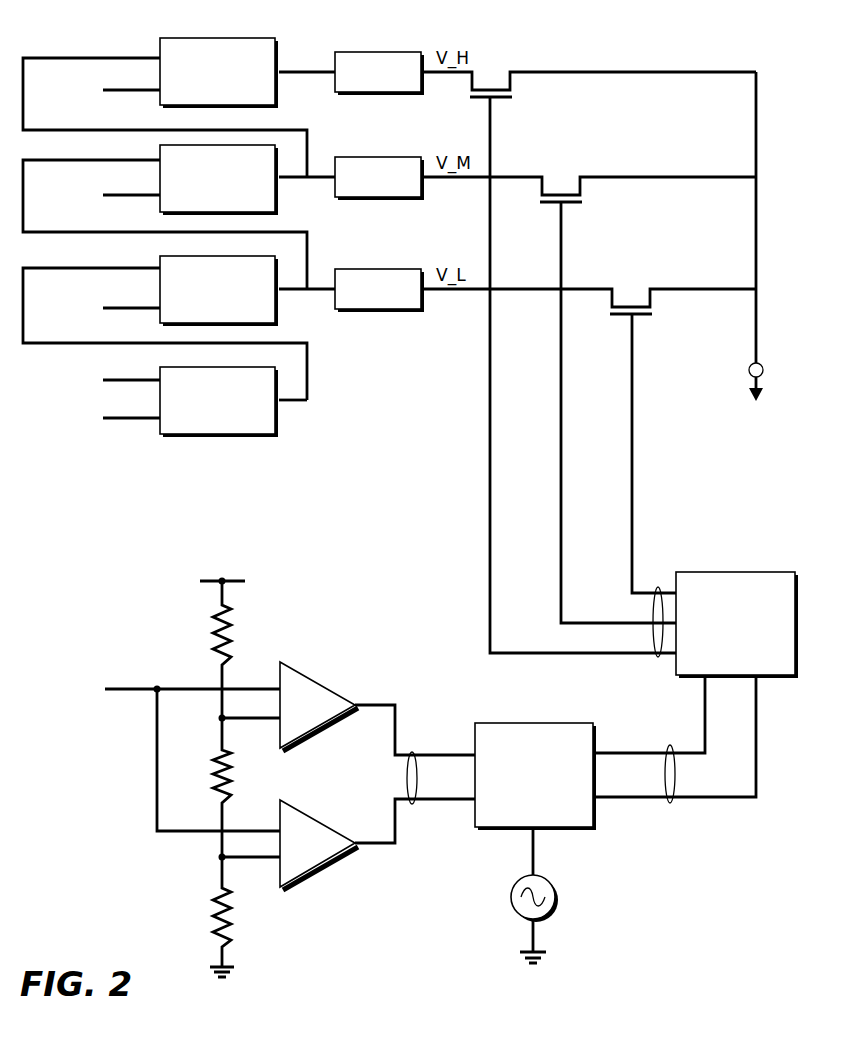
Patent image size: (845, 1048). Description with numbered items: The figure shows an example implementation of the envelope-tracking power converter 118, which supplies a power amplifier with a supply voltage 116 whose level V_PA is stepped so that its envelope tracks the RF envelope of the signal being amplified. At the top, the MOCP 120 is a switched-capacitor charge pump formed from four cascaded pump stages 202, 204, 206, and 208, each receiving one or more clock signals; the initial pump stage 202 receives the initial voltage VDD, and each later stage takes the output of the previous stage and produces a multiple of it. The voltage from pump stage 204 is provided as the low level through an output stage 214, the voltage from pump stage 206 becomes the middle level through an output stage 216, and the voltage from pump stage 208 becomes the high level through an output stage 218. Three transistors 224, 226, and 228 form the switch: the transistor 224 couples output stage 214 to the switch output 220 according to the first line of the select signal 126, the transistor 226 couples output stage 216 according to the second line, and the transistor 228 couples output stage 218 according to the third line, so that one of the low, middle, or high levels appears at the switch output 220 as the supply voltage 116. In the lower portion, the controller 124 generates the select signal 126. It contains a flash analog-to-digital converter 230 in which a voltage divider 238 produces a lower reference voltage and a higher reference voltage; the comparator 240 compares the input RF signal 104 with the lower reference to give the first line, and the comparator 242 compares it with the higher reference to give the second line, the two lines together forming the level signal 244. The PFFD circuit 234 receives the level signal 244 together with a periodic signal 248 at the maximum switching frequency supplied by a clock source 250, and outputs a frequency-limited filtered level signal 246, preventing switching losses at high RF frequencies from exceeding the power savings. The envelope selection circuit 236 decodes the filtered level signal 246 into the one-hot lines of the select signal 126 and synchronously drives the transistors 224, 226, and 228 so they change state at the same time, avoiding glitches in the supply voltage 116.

The input RF signal 104 is at (134, 687).
The supply voltage 116 is at (755, 337).
The envelope-tracking power converter 118 is at (139, 551).
The MOCP 120 is at (223, 237).
The controller 124 is at (565, 819).
The select signal 126 is at (660, 660).
The pump stage 202 is at (279, 422).
The pump stage 204 is at (279, 317).
The pump stage 206 is at (279, 205).
The pump stage 208 is at (279, 100).
The output stage 214 is at (380, 309).
The output stage 216 is at (380, 198).
The output stage 218 is at (380, 93).
The switch output 220 is at (749, 370).
The transistor 224 is at (631, 287).
The transistor 226 is at (559, 175).
The transistor 228 is at (489, 70).
The analog-to-digital converter 230 is at (342, 751).
The peak voltage following frequency divider circuit 234 is at (520, 796).
The envelope selection circuit 236 is at (721, 655).
The voltage divider 238 is at (247, 612).
The comparator 240 is at (324, 851).
The comparator 242 is at (324, 713).
The level signal 244 is at (411, 750).
The filtered level signal 246 is at (670, 805).
The periodic signal 248 is at (530, 862).
The clock source 250 is at (557, 905).